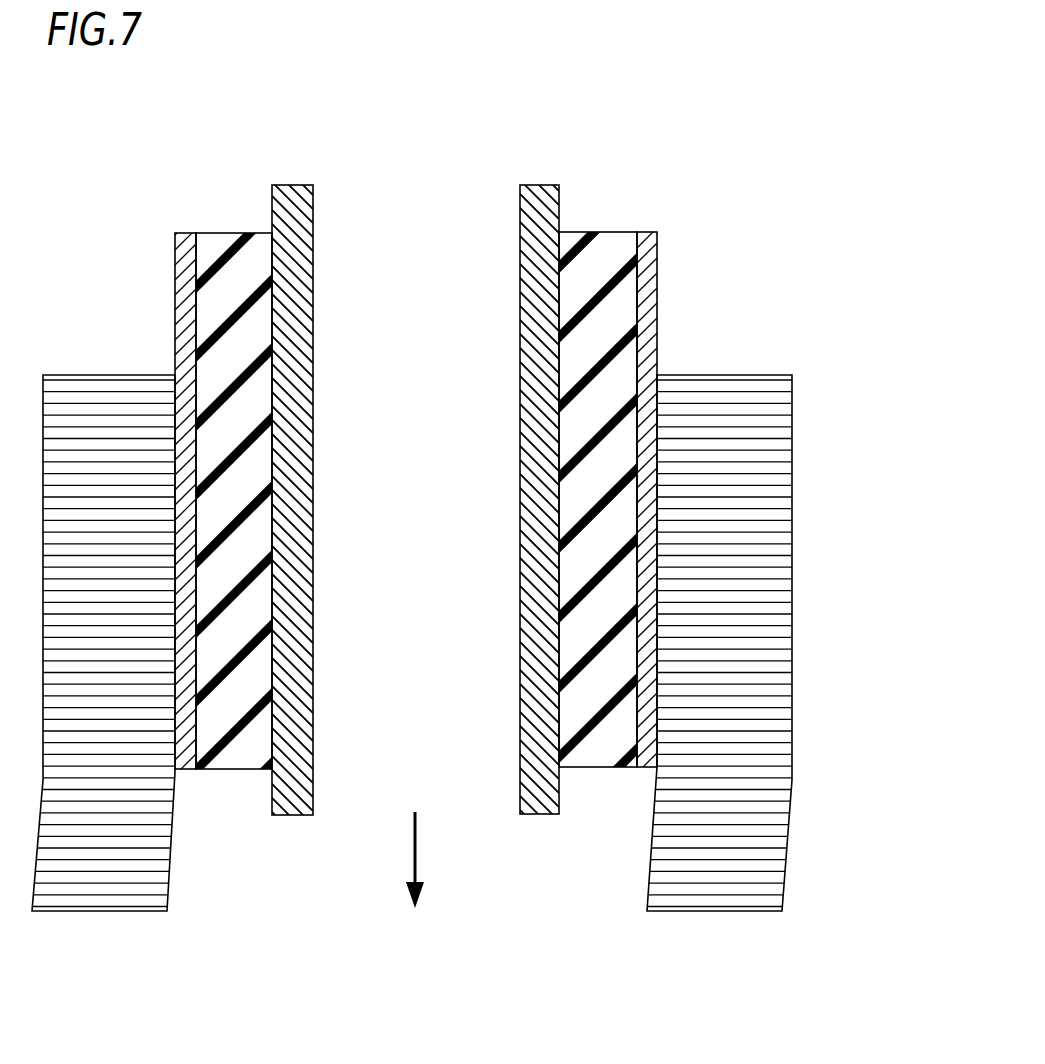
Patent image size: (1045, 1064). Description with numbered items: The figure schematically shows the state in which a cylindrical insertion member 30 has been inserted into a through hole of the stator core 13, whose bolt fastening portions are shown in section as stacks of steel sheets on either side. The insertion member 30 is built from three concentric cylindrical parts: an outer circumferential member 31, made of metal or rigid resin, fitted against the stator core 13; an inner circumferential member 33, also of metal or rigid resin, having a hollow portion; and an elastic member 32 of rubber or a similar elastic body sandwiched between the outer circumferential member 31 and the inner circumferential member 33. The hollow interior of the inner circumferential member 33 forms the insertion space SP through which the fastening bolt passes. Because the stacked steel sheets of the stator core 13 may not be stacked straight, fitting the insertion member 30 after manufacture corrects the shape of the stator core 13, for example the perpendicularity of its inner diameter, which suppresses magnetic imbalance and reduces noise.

The stator core 13 is at (793, 432).
The insertion member 30 is at (443, 491).
The outer circumferential member 31 is at (175, 258).
The elastic member 32 is at (217, 240).
The inner circumferential member 33 is at (578, 201).
The insertion space SP is at (442, 227).